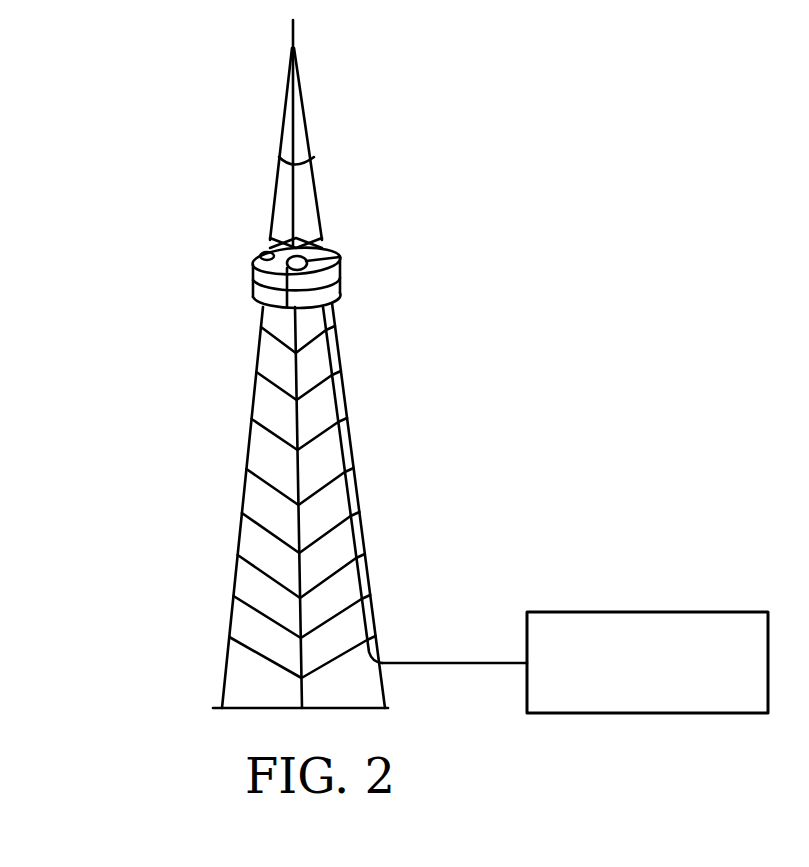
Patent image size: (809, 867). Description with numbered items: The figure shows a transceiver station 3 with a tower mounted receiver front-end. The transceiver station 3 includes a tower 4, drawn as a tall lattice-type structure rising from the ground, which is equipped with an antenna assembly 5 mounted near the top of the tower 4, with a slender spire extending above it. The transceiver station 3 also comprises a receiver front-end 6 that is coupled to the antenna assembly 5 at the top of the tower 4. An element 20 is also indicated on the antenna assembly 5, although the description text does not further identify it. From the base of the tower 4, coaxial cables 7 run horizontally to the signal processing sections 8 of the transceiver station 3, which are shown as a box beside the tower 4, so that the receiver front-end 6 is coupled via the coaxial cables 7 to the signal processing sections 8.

The transceiver station 3 is at (538, 257).
The tower 4 is at (308, 122).
The antenna assembly 5 is at (341, 285).
The receiver front-end 6 is at (341, 257).
The sensor on nacelle 20 is at (264, 252).
The coaxial cables 7 is at (437, 662).
The signal processing sections 8 is at (665, 627).